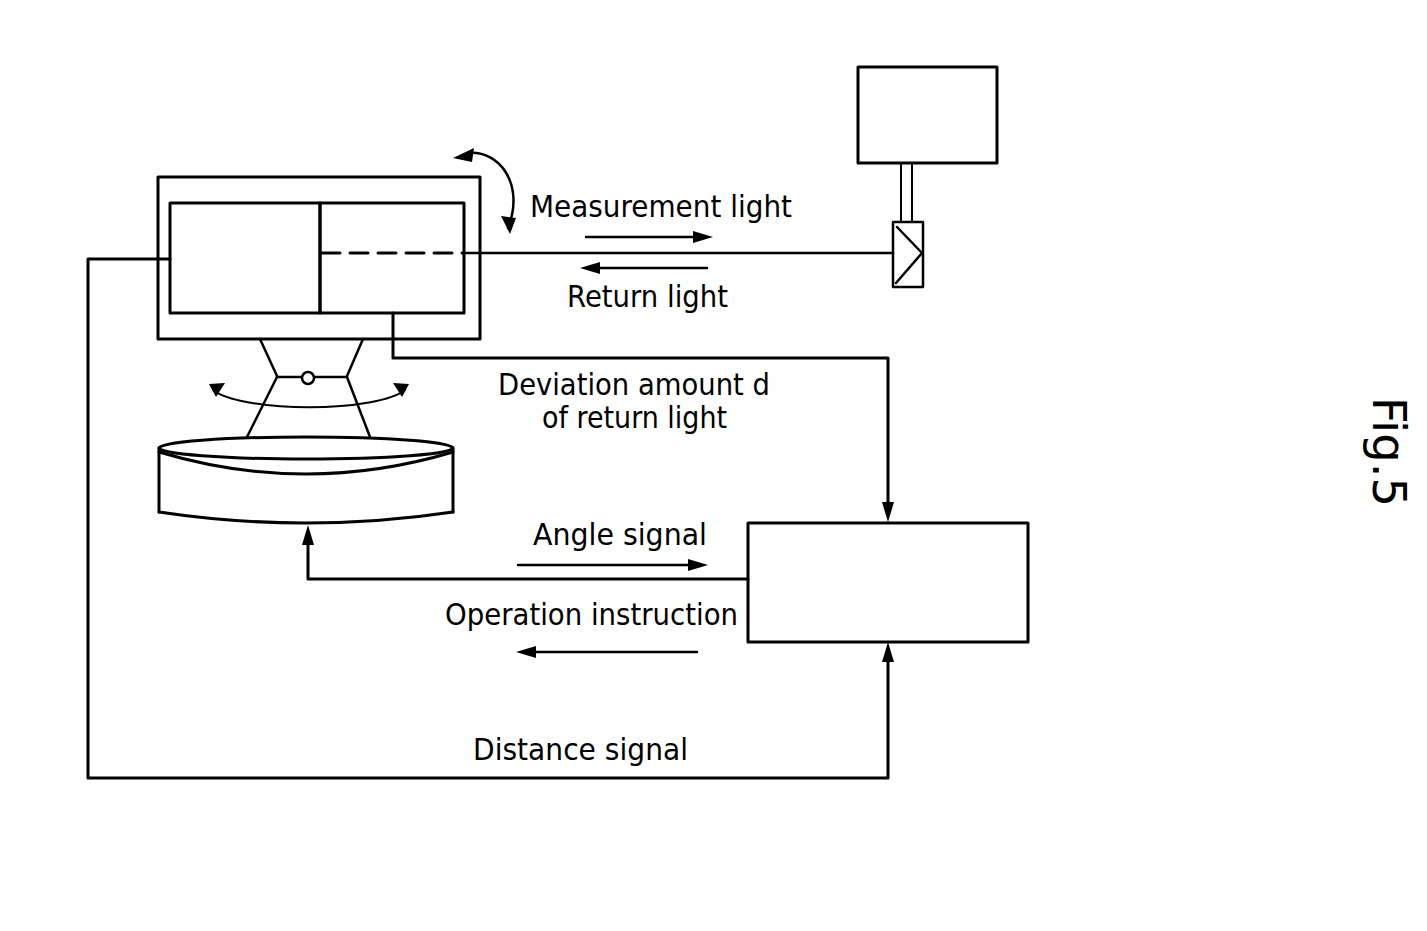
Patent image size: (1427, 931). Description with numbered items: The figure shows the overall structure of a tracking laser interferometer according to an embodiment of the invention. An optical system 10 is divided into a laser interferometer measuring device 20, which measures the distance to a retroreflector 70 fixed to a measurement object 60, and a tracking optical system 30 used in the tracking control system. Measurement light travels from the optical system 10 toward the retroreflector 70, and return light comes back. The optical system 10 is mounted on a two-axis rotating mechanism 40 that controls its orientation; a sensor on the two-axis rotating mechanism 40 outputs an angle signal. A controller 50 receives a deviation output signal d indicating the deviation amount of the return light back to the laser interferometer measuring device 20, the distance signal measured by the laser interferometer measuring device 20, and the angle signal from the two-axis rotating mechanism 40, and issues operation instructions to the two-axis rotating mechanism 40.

The optical system 10 is at (175, 176).
The laser interferometer measuring device 20 is at (233, 210).
The tracking optical system 30 is at (395, 205).
The two-axis rotating mechanism 40 is at (180, 523).
The controller 50 is at (981, 497).
The measurement object 60 is at (888, 66).
The retroreflector 70 is at (925, 255).